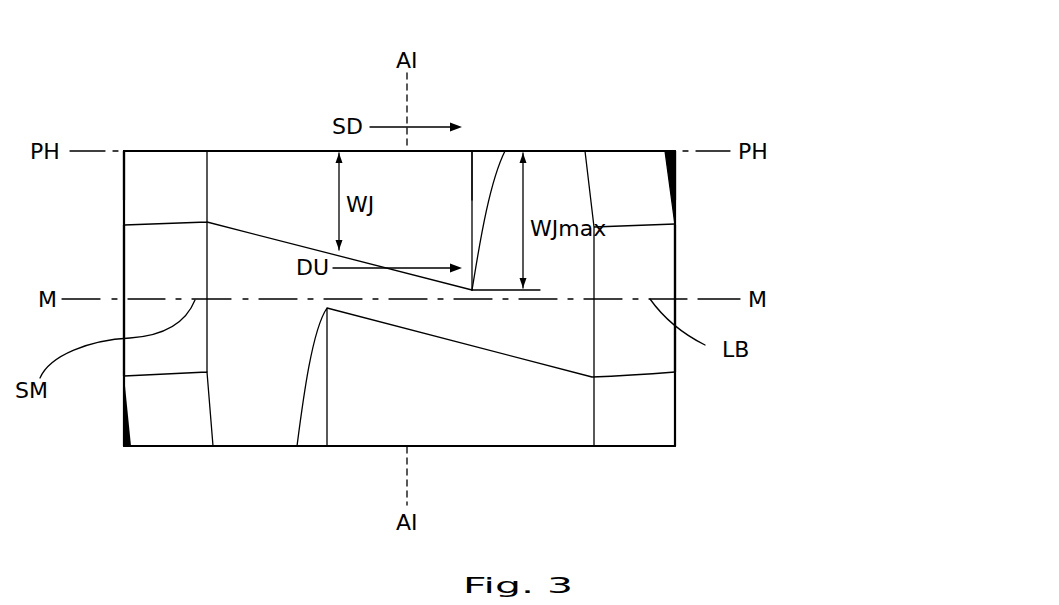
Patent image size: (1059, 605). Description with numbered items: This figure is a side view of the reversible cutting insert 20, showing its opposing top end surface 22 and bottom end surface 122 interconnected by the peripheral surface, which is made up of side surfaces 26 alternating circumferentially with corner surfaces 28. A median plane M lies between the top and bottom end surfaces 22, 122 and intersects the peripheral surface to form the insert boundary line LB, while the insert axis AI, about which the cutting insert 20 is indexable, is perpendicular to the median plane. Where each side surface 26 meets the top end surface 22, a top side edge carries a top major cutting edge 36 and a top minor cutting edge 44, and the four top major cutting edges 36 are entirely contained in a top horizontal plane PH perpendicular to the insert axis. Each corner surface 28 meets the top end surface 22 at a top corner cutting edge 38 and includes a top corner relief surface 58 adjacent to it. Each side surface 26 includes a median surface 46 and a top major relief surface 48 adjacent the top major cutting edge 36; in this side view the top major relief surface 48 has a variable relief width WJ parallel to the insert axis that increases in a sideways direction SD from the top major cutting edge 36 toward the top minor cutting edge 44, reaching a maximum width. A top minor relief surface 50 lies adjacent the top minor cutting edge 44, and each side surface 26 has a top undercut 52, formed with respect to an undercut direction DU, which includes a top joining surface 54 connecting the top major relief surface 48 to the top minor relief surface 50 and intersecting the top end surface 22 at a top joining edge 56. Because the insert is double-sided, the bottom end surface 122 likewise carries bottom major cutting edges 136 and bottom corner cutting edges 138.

The cutting insert 20 is at (598, 92).
The top end surface 22 is at (218, 150).
The side surface 26 is at (238, 355).
The corner surface 28 is at (148, 242).
The top major cutting edge 36 is at (305, 151).
The top corner cutting edge 38 is at (172, 151).
The top minor cutting edge 44 is at (540, 151).
The median surface 46 is at (253, 284).
The top major relief surface 48 is at (293, 209).
The top minor relief surface 50 is at (574, 197).
The top undercut 52 is at (450, 217).
The top joining surface 54 is at (483, 180).
The top joining edge 56 is at (483, 151).
The top corner relief surface 58 is at (182, 199).
The bottom end surface 122 is at (228, 450).
The bottom major cutting edge 136 is at (490, 448).
The bottom corner cutting edge 138 is at (165, 448).